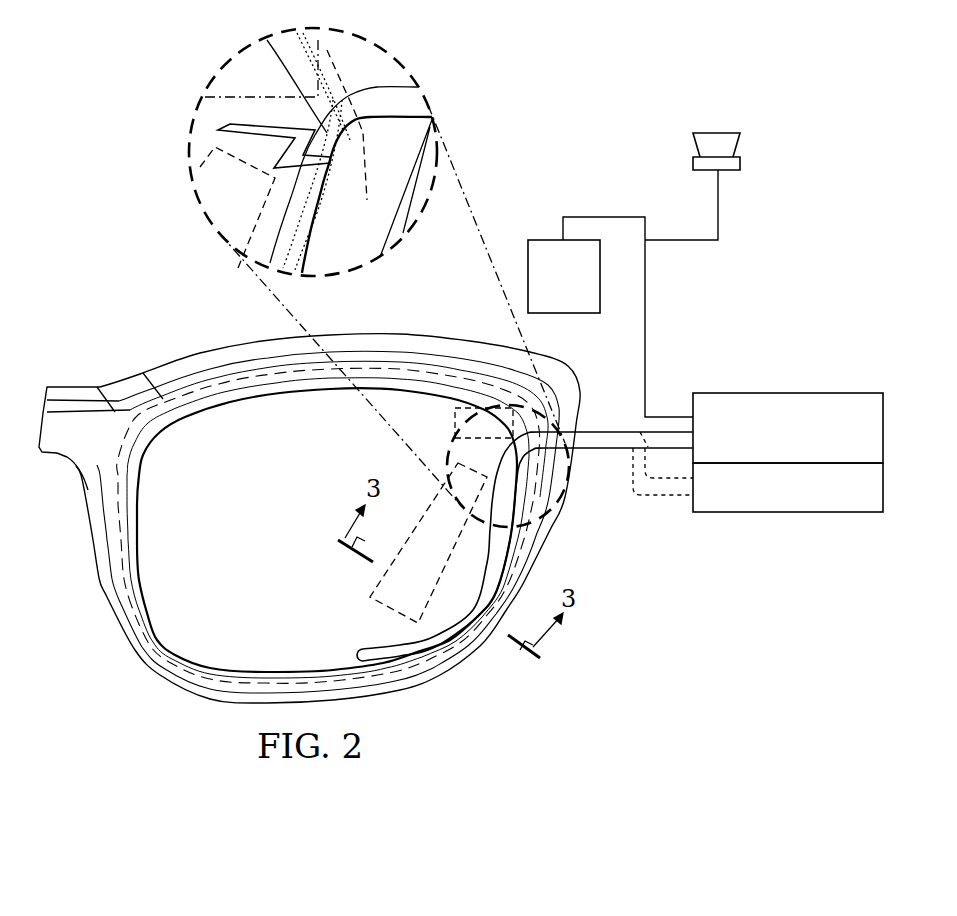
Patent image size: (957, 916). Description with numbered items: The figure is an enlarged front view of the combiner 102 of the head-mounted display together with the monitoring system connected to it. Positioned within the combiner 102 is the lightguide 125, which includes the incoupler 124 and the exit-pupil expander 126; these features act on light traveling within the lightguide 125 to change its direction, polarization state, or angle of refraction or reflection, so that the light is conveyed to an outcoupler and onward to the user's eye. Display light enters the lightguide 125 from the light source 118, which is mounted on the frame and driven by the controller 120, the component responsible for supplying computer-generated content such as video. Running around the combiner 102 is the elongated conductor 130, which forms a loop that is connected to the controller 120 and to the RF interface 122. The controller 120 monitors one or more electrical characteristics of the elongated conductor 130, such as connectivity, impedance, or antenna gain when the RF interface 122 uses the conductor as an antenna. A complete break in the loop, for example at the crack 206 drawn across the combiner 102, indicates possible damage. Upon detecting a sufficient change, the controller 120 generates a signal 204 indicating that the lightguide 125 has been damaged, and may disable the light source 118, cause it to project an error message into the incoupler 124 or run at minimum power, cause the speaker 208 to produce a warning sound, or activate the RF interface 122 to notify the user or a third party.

The combiner 102 is at (283, 413).
The light source 118 is at (586, 291).
The controller 120 is at (788, 392).
The RF interface 122 is at (787, 513).
The incoupler 124 is at (465, 407).
The lightguide 125 is at (330, 507).
The exit-pupil expander 126 is at (388, 590).
The elongated conductor 130 is at (493, 565).
The signal 204 is at (633, 215).
The crack 206 is at (215, 128).
The speaker 208 is at (728, 130).